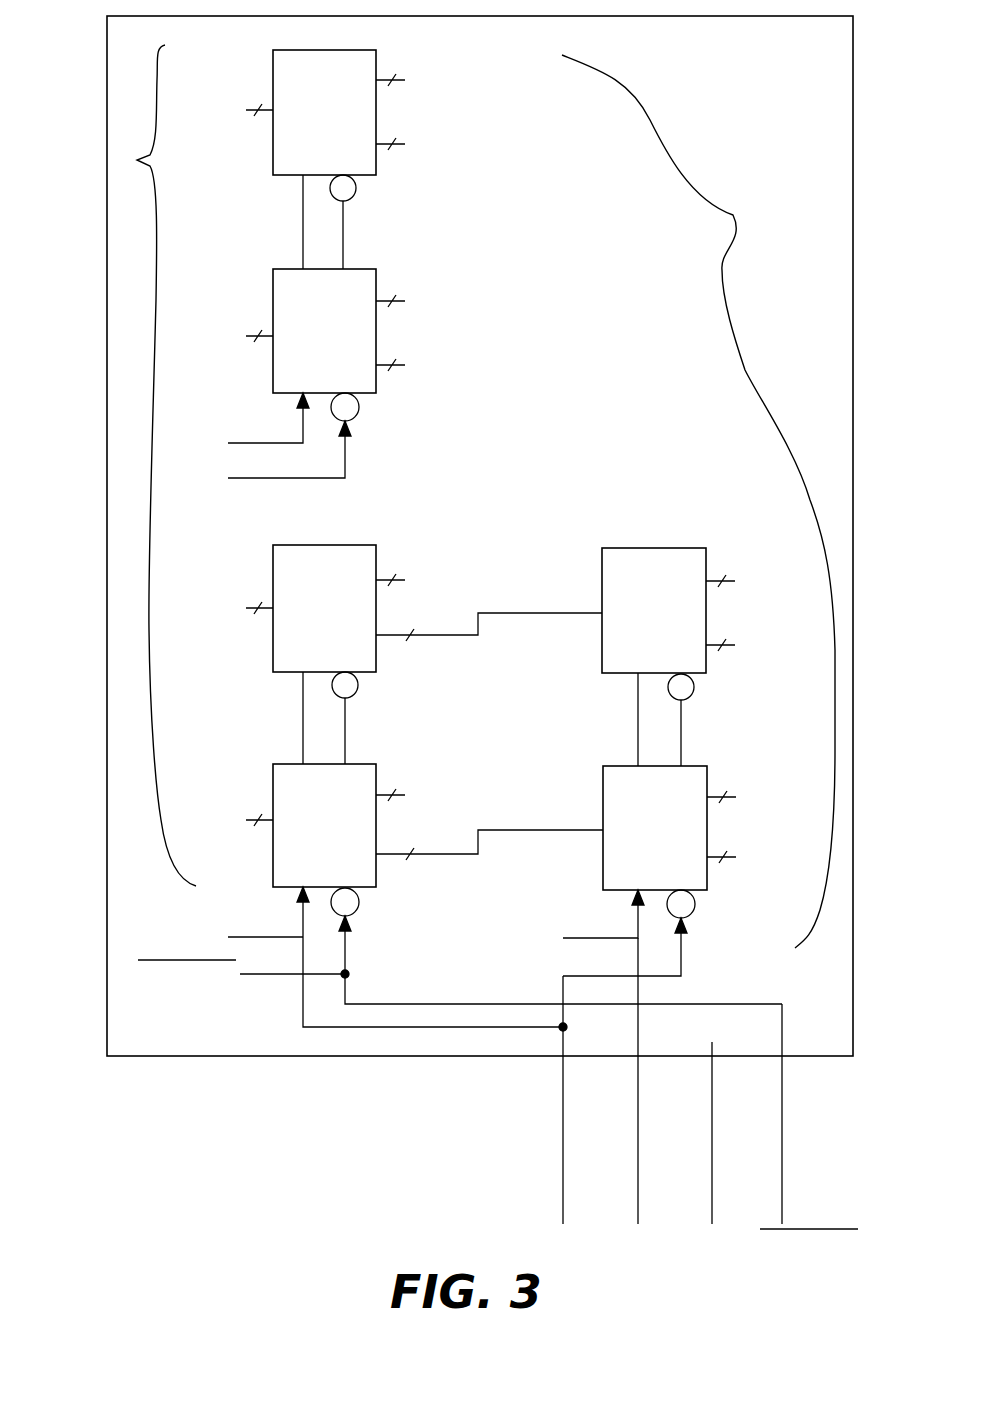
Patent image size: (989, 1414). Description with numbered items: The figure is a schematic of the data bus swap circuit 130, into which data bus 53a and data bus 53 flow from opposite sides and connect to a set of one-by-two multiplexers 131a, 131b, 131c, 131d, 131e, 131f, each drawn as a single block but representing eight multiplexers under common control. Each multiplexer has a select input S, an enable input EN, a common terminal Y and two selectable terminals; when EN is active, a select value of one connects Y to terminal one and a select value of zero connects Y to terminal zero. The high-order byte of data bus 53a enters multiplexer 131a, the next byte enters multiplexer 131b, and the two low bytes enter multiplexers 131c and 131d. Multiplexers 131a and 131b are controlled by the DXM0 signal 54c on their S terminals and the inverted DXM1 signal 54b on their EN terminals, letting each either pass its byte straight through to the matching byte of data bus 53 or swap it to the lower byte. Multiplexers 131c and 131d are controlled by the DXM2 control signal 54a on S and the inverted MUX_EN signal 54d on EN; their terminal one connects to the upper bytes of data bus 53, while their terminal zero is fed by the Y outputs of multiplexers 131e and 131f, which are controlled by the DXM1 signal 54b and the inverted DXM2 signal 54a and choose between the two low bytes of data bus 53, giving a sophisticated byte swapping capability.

The data bus swap circuit 130 is at (480, 536).
The data bus 53 is at (733, 215).
The data bus 53a is at (137, 160).
The multiplexer 131a is at (283, 176).
The multiplexer 131b is at (285, 268).
The multiplexer 131c is at (362, 545).
The multiplexer 131d is at (362, 764).
The multiplexer 131e is at (617, 548).
The multiplexer 131f is at (617, 766).
The DXM2 control signal 54a is at (568, 1116).
The DXM1 signal 54b is at (647, 1097).
The DXM0 signal 54c is at (720, 1149).
The MUX_EN signal 54d is at (809, 1131).